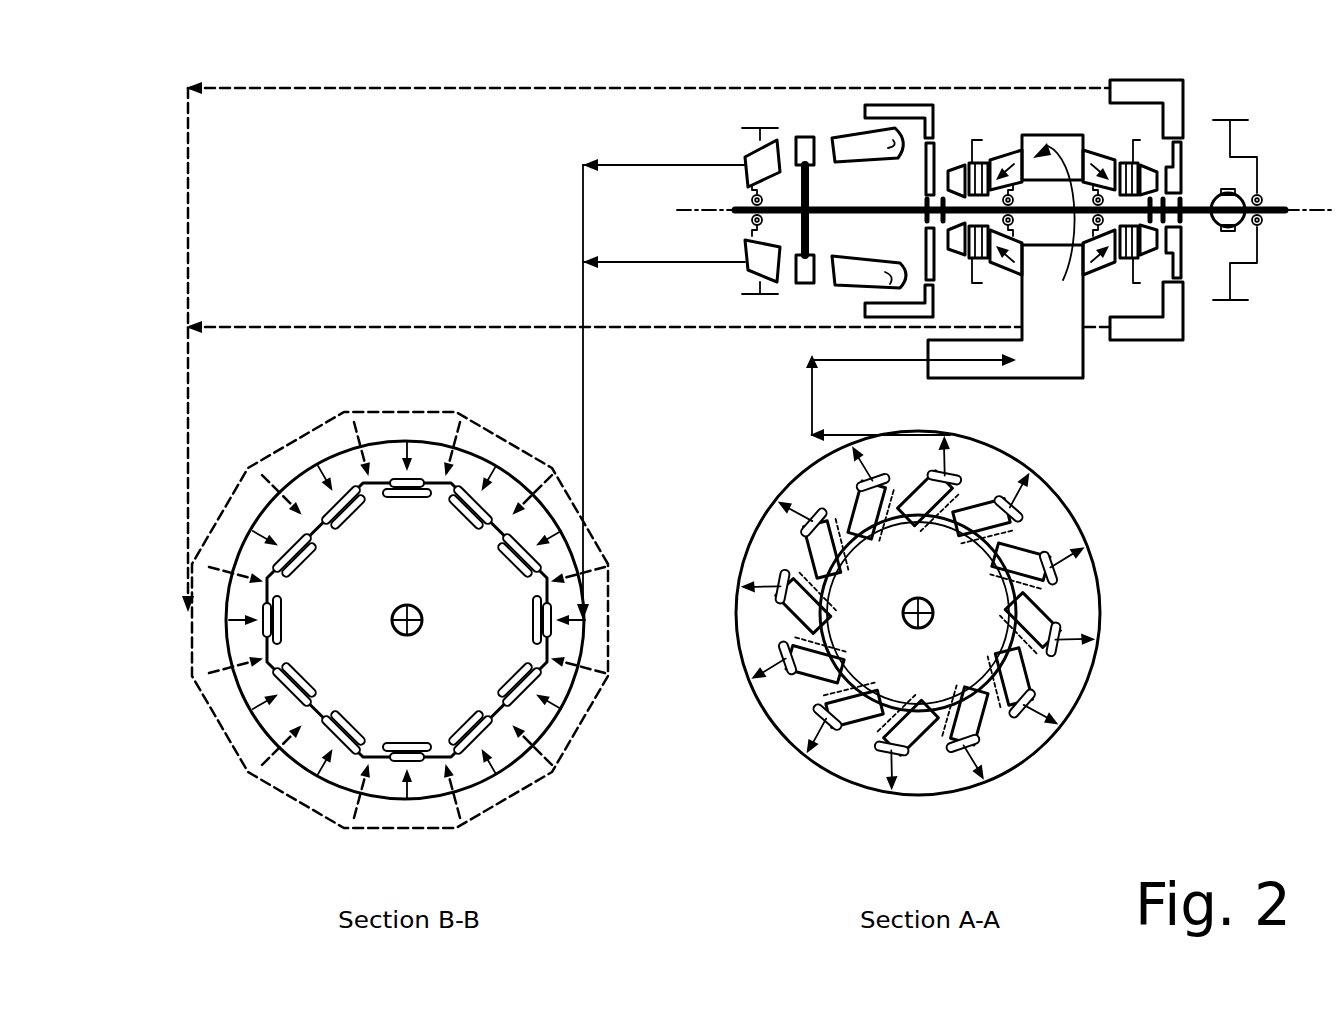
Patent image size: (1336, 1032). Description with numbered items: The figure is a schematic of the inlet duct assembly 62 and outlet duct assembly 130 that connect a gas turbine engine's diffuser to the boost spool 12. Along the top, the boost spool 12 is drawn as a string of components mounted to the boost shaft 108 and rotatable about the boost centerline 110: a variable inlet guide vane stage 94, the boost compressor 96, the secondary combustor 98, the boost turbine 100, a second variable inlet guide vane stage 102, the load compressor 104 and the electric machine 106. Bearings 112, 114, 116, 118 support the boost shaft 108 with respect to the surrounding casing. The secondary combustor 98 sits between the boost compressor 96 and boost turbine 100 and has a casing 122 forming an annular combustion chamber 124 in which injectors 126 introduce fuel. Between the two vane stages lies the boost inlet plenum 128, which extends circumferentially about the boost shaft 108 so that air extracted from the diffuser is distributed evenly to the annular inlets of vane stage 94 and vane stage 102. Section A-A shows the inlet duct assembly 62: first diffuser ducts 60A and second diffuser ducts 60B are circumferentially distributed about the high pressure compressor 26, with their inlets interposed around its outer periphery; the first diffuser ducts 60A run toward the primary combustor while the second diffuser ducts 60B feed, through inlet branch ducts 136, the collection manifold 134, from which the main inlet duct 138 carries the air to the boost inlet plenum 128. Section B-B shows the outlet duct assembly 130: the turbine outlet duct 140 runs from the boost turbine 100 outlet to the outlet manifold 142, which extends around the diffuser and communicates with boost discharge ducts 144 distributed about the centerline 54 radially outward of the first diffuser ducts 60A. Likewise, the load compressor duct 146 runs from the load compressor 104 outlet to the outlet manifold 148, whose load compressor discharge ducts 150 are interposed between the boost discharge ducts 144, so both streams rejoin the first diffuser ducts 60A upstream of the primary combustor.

The boost spool 12 is at (1278, 85).
The high pressure compressor 26 is at (862, 540).
The centerline 54 is at (412, 613).
The first diffuser ducts 60A is at (465, 510).
The second diffuser ducts 60B is at (885, 478).
The inlet duct assembly 62 is at (1095, 472).
The variable inlet guide vane stage 94 is at (978, 162).
The boost compressor 96 is at (952, 155).
The secondary combustor 98 is at (848, 122).
The boost turbine 100 is at (806, 125).
The variable inlet guide vane stage 102 is at (1124, 160).
The load compressor 104 is at (1190, 135).
The electric machine 106 is at (1243, 195).
The boost shaft 108 is at (750, 200).
The boost centerline 110 is at (1302, 205).
The bearing 112 is at (752, 222).
The bearing 114 is at (1006, 232).
The bearing 116 is at (1103, 232).
The bearing 118 is at (1263, 224).
The casing 122 is at (893, 158).
The annular combustion chamber 124 is at (870, 160).
The injectors 126 is at (890, 130).
The boost inlet plenum 128 is at (1048, 135).
The outlet duct assembly 130 is at (160, 483).
The collection manifold 134 is at (1070, 506).
The inlet branch ducts 136 is at (865, 470).
The main inlet duct 138 is at (812, 402).
The turbine outlet duct 140 is at (632, 262).
The outlet manifold 142 is at (310, 440).
The boost discharge ducts 144 is at (365, 490).
The load compressor duct 146 is at (337, 327).
The outlet manifold 148 is at (498, 420).
The load compressor discharge ducts 150 is at (385, 430).